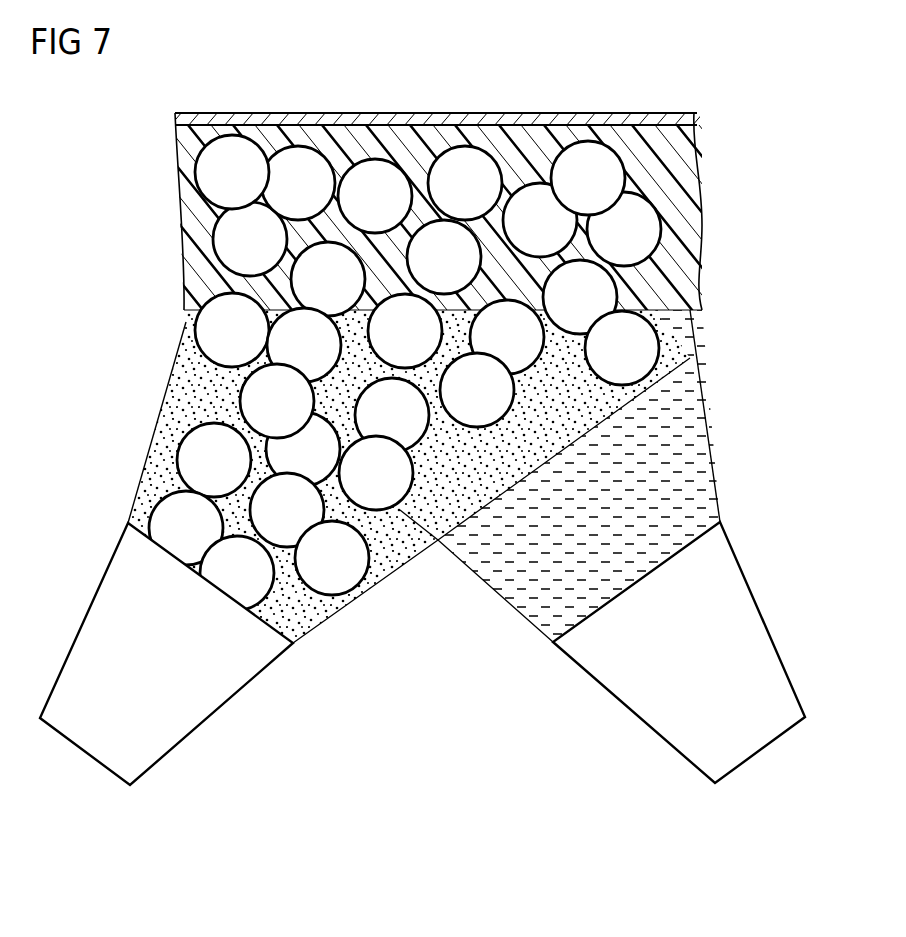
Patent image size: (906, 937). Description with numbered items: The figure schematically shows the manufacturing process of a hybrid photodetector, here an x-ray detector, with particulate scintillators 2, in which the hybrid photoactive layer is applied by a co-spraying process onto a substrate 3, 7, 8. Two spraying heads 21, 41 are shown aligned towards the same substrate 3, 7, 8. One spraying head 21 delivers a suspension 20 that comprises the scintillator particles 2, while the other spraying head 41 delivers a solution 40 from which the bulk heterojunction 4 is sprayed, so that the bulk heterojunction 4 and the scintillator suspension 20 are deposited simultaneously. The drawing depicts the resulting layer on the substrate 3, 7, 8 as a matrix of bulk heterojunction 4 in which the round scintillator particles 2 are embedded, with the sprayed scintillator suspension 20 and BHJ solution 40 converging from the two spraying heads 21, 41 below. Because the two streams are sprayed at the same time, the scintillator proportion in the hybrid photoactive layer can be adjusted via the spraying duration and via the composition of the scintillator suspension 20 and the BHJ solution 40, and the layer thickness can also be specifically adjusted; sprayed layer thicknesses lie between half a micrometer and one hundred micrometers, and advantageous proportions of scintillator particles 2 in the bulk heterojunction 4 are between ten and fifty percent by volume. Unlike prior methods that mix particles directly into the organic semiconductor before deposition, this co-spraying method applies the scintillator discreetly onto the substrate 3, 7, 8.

The scintillator particles 2 is at (226, 140).
The substrate 3 is at (437, 94).
The substrate 7 is at (437, 94).
The substrate 8 is at (522, 122).
The bulk heterojunction 4 is at (192, 198).
The scintillator suspension 20 is at (160, 424).
The spraying head 21 is at (110, 582).
The BHJ solution 40 is at (705, 444).
The spraying head 41 is at (733, 582).